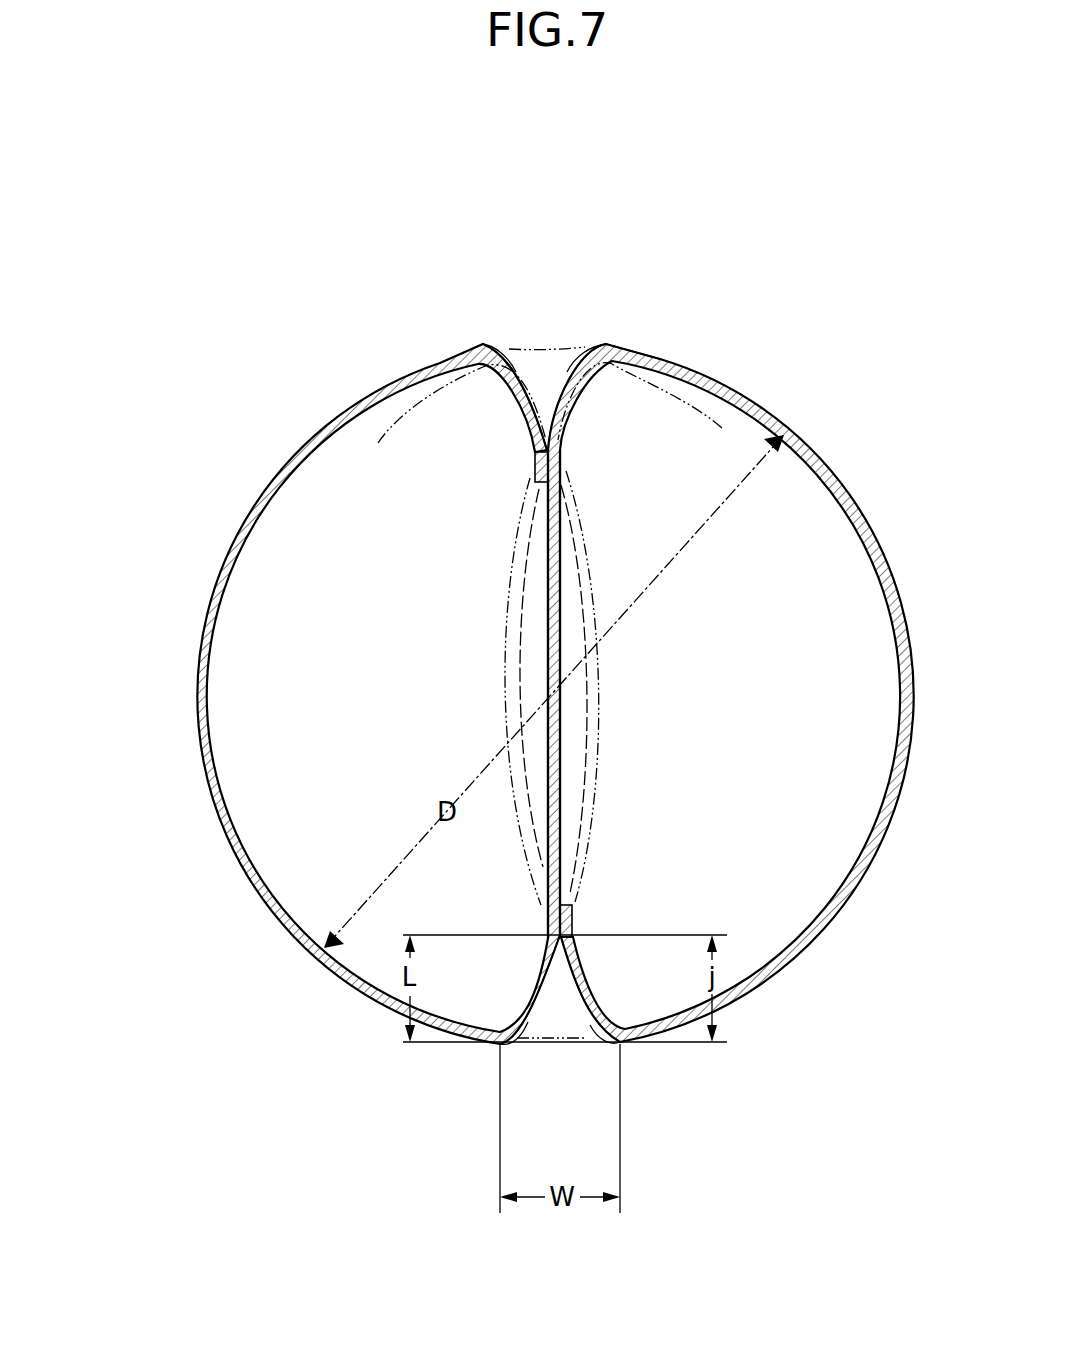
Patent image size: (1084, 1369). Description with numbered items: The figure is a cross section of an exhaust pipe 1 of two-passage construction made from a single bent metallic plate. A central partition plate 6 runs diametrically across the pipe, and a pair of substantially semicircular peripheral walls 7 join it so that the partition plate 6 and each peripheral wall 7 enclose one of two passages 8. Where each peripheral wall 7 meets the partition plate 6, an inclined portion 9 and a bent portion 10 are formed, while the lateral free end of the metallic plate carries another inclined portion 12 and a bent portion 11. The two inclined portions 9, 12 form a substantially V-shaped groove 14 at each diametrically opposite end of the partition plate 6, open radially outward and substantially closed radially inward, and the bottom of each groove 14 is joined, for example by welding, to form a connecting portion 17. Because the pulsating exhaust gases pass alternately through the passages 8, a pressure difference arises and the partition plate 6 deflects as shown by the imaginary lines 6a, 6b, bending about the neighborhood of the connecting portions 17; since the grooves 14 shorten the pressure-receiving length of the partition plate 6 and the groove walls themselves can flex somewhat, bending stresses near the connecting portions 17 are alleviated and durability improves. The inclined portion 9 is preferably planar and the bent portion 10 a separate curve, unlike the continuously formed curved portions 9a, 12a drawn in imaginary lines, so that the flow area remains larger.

The exhaust pipe 1 is at (793, 281).
The partition plate 6 is at (562, 725).
The imaginary line of deflected partition plate 6a is at (517, 677).
The imaginary line of deflected partition plate 6b is at (600, 672).
The peripheral wall 7 is at (847, 486).
The passage 8 is at (309, 712).
The inclined portion 9 is at (573, 418).
The continuously formed curved portion 9a is at (646, 409).
The bent portion 10 is at (594, 342).
The bent portion 11 is at (502, 345).
The inclined portion 12 is at (527, 425).
The continuously formed curved portion 12a is at (449, 420).
The V-shaped groove 14 is at (547, 370).
The connecting portion 17 is at (538, 457).